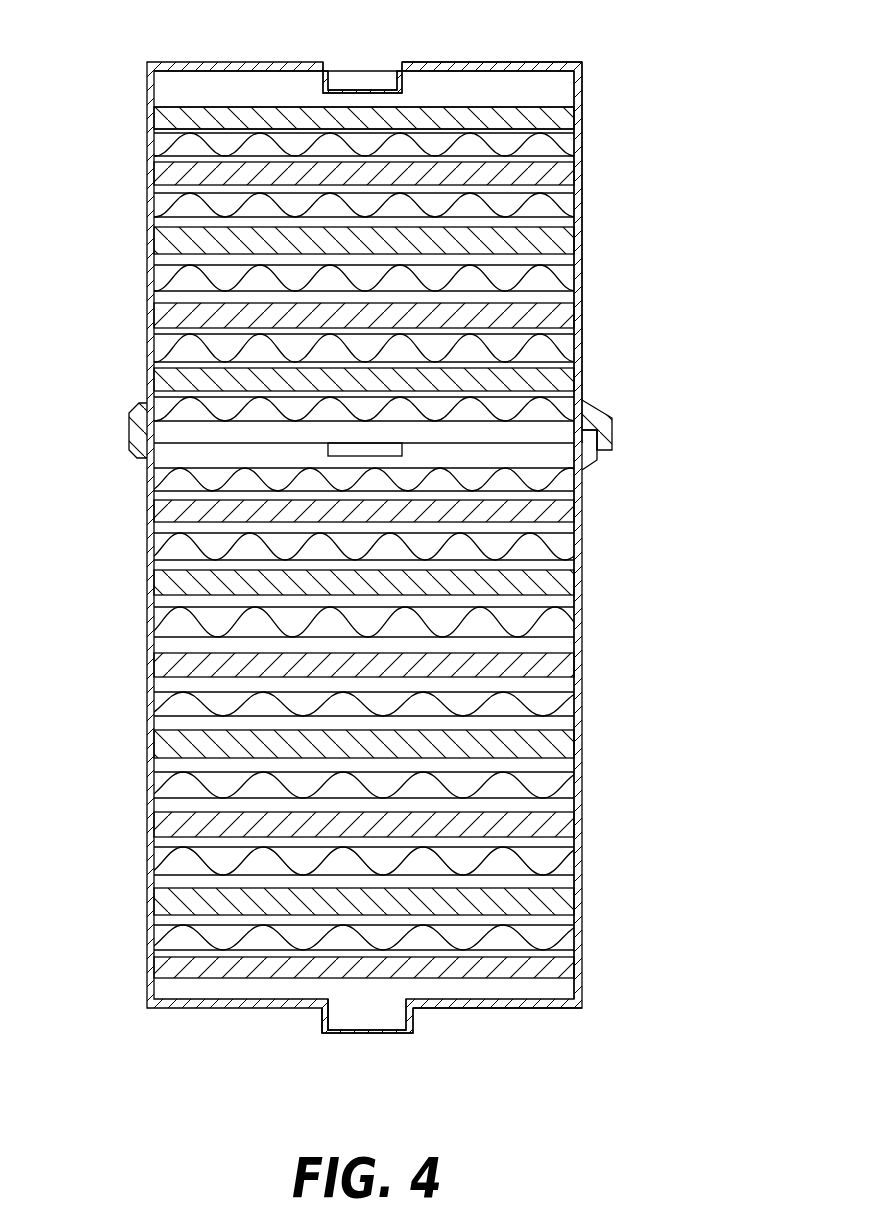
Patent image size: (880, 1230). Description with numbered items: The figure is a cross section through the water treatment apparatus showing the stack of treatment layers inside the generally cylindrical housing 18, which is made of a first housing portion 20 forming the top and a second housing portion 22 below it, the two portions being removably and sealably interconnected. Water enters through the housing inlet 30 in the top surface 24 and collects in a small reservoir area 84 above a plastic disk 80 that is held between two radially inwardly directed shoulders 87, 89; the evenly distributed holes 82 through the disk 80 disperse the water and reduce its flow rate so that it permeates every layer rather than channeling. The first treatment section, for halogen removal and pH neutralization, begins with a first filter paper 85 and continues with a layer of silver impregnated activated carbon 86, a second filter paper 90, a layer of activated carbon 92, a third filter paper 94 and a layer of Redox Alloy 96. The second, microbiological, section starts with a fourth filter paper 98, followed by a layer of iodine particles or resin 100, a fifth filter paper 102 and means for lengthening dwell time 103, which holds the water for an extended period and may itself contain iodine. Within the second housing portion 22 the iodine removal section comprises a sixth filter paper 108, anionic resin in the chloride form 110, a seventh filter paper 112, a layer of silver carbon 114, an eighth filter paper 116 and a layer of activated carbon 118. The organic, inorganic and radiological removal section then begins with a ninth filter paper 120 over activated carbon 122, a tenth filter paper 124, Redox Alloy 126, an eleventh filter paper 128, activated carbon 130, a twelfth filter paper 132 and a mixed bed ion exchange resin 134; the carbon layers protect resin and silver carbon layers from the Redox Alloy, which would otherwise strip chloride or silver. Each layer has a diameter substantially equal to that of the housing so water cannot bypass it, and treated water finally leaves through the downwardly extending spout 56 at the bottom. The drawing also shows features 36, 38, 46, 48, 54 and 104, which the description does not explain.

The housing 18 is at (683, 70).
The first housing portion 20 is at (586, 155).
The second housing portion 22 is at (586, 565).
The top surface 24 is at (436, 66).
The housing inlet 30 is at (333, 85).
The side tab 36 is at (607, 412).
The tab inner face 38 is at (600, 437).
The side tab extension 46 is at (592, 458).
The bottom housing wall 48 is at (470, 1008).
The bottom recess wall 54 is at (325, 1018).
The spout 56 is at (340, 1017).
The plastic disk 80 is at (192, 113).
The holes 82 is at (219, 107).
The reservoir area 84 is at (538, 86).
The first filter paper 85 is at (565, 145).
The silver carbon layer 86 is at (165, 175).
The shoulder 87 is at (162, 108).
The shoulder 89 is at (162, 132).
The second filter paper 90 is at (567, 203).
The activated carbon layer 92 is at (163, 245).
The third filter paper 94 is at (563, 285).
The Redox Alloy layer 96 is at (160, 320).
The fourth filter paper 98 is at (570, 355).
The iodine particles or resin layer 100 is at (165, 380).
The fifth filter paper 102 is at (562, 408).
The means for lengthening dwell time 103 is at (343, 441).
The center connector 104 is at (353, 450).
The sixth filter paper 108 is at (575, 485).
The anionic resin layer 110 is at (160, 510).
The seventh filter paper 112 is at (565, 548).
The silver carbon layer 114 is at (160, 575).
The eighth filter paper 116 is at (570, 625).
The activated carbon layer 118 is at (163, 665).
The ninth filter paper 120 is at (570, 702).
The activated carbon layer 122 is at (160, 745).
The tenth filter paper 124 is at (567, 783).
The Redox Alloy layer 126 is at (162, 826).
The eleventh filter paper 128 is at (570, 862).
The activated carbon layer 130 is at (160, 900).
The twelfth filter paper 132 is at (567, 940).
The ion exchange resin layer 134 is at (165, 972).